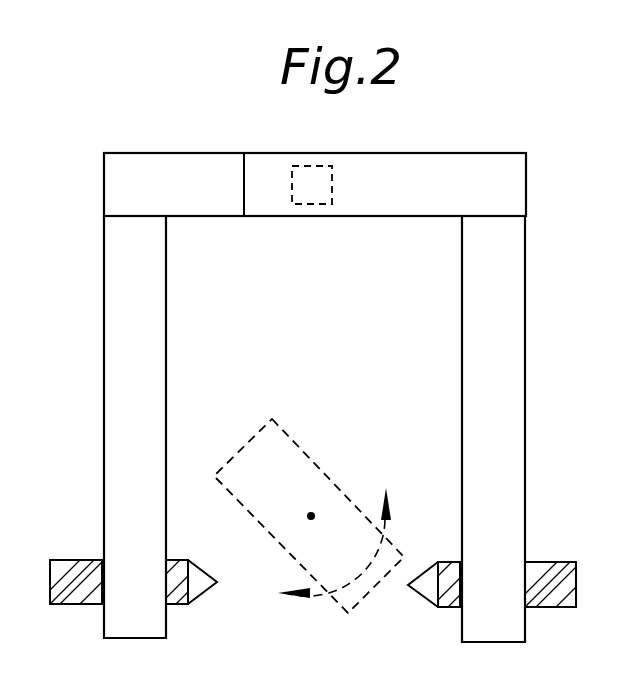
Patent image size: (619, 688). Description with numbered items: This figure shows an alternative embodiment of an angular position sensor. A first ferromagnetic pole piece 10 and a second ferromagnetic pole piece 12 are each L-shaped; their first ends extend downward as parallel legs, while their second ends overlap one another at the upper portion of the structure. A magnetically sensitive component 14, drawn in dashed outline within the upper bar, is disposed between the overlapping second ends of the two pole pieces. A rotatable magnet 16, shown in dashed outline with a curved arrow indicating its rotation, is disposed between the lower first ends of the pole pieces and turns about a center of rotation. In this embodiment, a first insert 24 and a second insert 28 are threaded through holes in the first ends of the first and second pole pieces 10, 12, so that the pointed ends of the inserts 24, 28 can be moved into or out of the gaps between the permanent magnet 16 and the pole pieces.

The first ferromagnetic pole piece 10 is at (111, 330).
The second ferromagnetic pole piece 12 is at (515, 279).
The magnetically sensitive component 14 is at (314, 190).
The rotatable magnet 16 is at (290, 432).
The first insert 24 is at (197, 588).
The second insert 28 is at (423, 592).